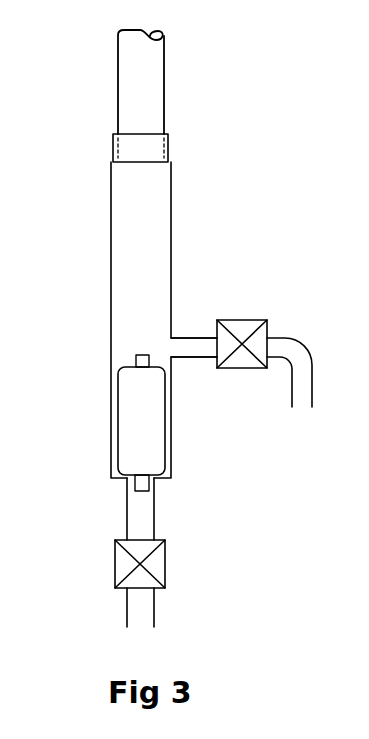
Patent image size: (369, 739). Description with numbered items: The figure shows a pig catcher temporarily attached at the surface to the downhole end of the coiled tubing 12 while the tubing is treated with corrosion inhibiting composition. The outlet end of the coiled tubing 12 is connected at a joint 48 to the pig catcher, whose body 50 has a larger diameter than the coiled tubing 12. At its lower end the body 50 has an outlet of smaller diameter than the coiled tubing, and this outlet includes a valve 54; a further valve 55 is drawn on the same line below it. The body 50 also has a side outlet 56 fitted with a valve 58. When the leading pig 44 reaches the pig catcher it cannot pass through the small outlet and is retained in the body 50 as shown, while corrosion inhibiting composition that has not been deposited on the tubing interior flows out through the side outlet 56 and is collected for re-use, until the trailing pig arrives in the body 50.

The coiled tubing 12 is at (153, 92).
The joint 48 is at (133, 143).
The body 50 is at (163, 177).
The side outlet 56 is at (193, 338).
The valve 58 is at (236, 362).
The leading pig 44 is at (133, 427).
The valve 54 is at (145, 512).
The valve 55 is at (158, 557).